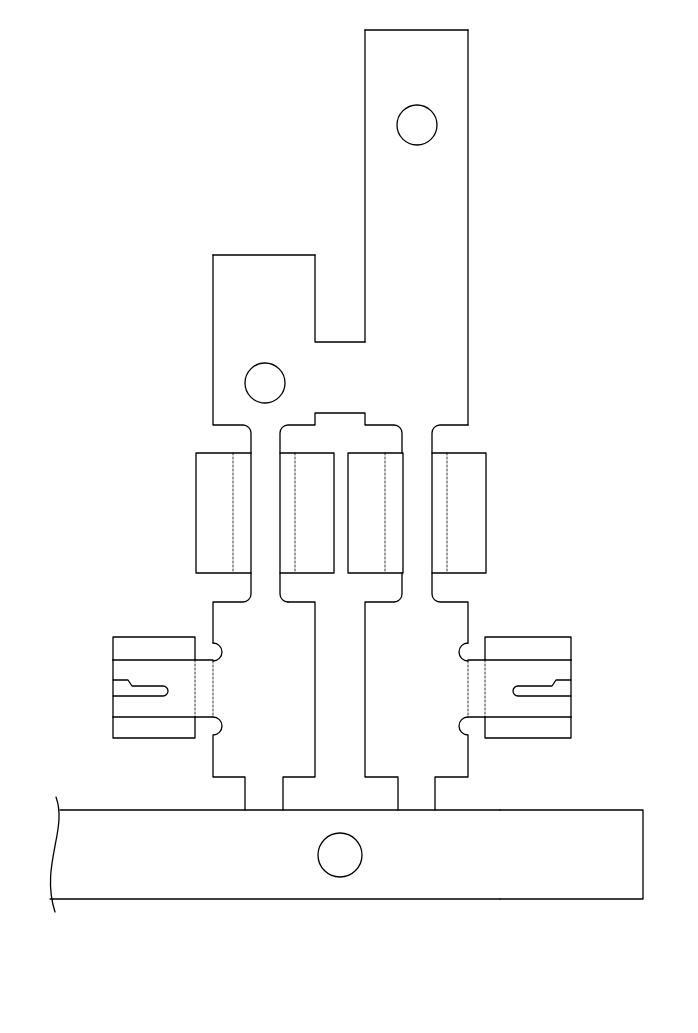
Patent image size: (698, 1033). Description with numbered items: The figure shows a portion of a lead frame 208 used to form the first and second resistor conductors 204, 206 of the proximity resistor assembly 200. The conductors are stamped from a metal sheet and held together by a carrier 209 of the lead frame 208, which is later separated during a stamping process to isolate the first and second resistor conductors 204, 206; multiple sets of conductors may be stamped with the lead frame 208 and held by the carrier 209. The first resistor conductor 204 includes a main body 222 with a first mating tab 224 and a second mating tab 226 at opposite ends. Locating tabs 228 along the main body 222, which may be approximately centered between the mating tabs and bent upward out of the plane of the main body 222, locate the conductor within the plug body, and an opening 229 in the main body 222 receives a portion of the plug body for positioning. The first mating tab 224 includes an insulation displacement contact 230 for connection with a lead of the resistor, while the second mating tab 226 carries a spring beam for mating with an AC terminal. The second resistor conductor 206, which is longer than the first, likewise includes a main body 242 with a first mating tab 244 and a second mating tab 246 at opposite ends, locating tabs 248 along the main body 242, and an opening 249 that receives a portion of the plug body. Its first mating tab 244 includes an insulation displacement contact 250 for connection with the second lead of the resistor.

The proximity resistor assembly 200 is at (261, 90).
The first resistor conductor 204 is at (231, 307).
The second resistor conductor 206 is at (437, 207).
The lead frame 208 is at (108, 916).
The carrier 209 is at (518, 860).
The main body 222 is at (258, 517).
The first mating tab 224 is at (130, 665).
The second mating tab 226 is at (253, 255).
The locating tabs 228 is at (207, 535).
The opening 229 is at (248, 383).
The insulation displacement contact 230 is at (103, 709).
The main body 242 is at (455, 330).
The first mating tab 244 is at (558, 735).
The second mating tab 246 is at (428, 73).
The locating tabs 248 is at (468, 512).
The opening 249 is at (432, 110).
The insulation displacement contact 250 is at (582, 645).